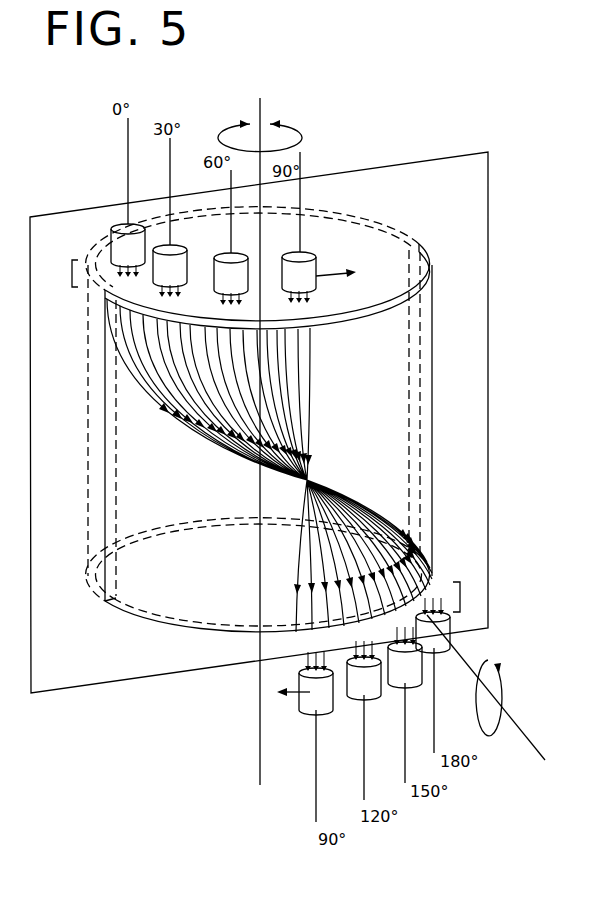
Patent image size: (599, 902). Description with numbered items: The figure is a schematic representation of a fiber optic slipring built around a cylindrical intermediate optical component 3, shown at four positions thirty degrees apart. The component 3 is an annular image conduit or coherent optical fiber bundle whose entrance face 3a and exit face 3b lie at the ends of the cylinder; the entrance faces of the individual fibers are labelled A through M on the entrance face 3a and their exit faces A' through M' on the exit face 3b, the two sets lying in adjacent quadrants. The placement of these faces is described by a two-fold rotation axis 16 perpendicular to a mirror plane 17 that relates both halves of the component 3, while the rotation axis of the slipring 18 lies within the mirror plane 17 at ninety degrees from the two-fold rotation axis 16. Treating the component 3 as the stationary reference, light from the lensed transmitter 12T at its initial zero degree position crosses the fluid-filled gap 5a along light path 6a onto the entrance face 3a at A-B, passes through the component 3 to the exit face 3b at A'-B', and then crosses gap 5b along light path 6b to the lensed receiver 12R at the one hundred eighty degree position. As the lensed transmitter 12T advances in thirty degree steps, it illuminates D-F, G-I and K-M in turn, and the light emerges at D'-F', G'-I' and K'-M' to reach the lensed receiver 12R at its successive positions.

The cylindrical intermediate optical component 3 is at (187, 492).
The entrance face 3a is at (332, 320).
The exit face 3b is at (302, 631).
The gap 5a is at (60, 273).
The gap 5b is at (469, 597).
The light path 6a is at (117, 268).
The light path 6b is at (308, 664).
The lensed transmitter 12T is at (130, 248).
The lensed receiver 12R is at (308, 702).
The two-fold rotation axis 16 is at (530, 735).
The mirror plane 17 is at (67, 670).
The rotation axis of the slipring 18 is at (327, 160).